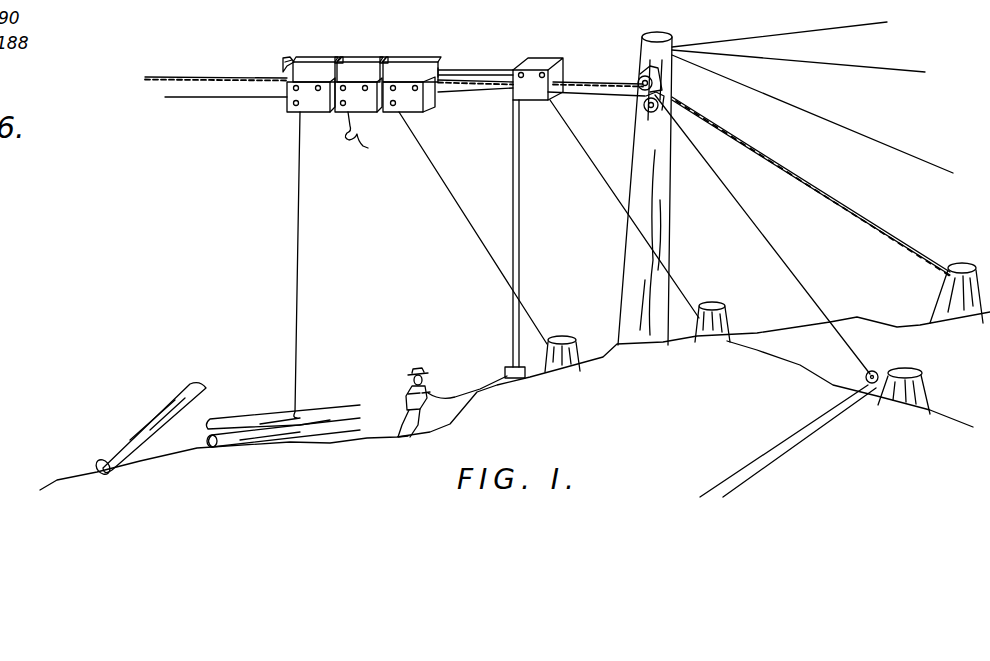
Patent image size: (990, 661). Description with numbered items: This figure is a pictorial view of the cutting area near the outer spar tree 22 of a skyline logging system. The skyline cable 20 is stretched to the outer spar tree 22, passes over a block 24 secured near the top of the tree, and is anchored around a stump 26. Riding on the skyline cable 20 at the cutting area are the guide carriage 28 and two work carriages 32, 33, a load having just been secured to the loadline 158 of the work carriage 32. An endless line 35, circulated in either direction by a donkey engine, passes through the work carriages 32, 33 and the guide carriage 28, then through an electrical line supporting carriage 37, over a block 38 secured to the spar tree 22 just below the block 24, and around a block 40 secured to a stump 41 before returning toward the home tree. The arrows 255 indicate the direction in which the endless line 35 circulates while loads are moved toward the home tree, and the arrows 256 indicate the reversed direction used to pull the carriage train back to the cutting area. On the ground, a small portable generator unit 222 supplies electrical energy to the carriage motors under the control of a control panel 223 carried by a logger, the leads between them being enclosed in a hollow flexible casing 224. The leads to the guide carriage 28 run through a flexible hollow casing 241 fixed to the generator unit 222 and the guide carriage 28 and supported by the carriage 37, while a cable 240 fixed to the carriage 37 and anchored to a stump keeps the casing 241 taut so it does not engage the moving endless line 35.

The skyline cable 20 is at (172, 75).
The arrows indicating reversed direction of circulation 256 is at (197, 85).
The arrows indicating direction of circulation 255 is at (206, 103).
The work carriage 32 is at (314, 58).
The work carriage 33 is at (362, 58).
The guide carriage 28 is at (409, 58).
The flexible hollow casing 241 is at (467, 69).
The electrical line supporting carriage 37 is at (556, 71).
The block 24 is at (660, 82).
The block 38 is at (642, 110).
The endless line 35 is at (173, 98).
The loadline 158 is at (372, 135).
The outer spar tree 22 is at (655, 207).
The stump 26 is at (966, 262).
The cable 240 is at (678, 292).
The portable generator unit 222 is at (510, 368).
The control panel 223 is at (400, 395).
The hollow flexible casing 224 is at (464, 386).
The block 40 is at (866, 374).
The stump 41 is at (923, 384).